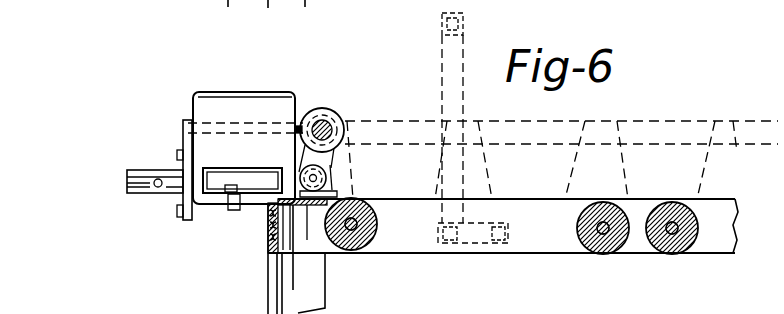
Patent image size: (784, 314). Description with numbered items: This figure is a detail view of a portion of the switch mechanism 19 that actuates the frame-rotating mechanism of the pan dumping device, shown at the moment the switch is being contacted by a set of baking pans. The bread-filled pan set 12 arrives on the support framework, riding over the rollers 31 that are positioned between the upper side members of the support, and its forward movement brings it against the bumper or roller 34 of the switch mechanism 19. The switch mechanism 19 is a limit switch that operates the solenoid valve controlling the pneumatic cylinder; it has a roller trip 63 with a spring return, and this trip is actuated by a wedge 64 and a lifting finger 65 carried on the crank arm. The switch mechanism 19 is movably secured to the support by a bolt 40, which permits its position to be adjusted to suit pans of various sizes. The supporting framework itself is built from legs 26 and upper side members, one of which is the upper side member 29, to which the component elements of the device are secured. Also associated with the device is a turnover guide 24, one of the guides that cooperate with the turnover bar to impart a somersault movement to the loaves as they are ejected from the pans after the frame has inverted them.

The switch mechanism 19 is at (273, 85).
The roller trip 63 is at (242, 122).
The wedge 64 is at (184, 142).
The lifting finger 65 is at (162, 192).
The bolt 40 is at (242, 180).
The bumper or roller 34 is at (330, 112).
The upper side member 29 is at (465, 38).
The pan set 12 is at (672, 118).
The rollers 31 is at (348, 250).
The legs 26 is at (268, 281).
The turnover guide 24 is at (162, 311).